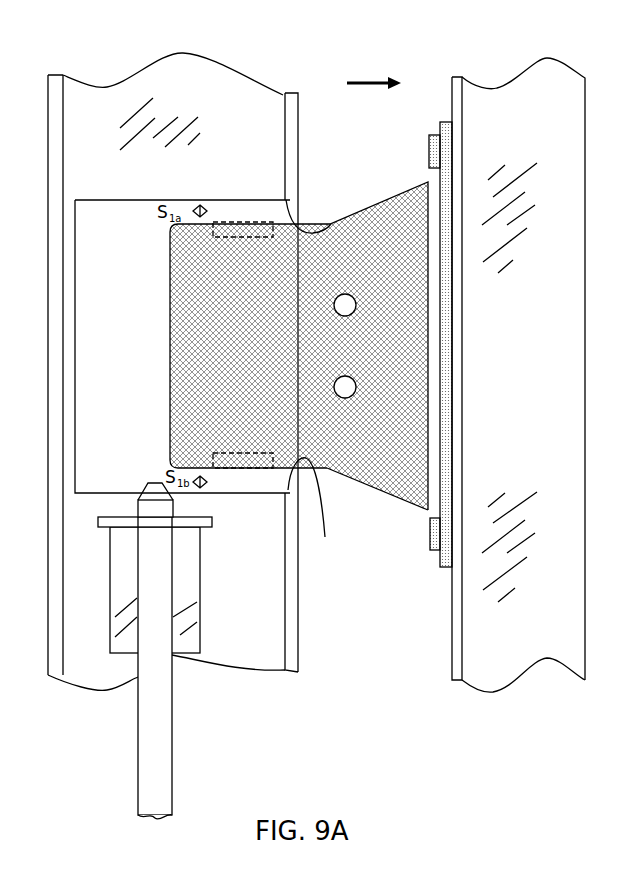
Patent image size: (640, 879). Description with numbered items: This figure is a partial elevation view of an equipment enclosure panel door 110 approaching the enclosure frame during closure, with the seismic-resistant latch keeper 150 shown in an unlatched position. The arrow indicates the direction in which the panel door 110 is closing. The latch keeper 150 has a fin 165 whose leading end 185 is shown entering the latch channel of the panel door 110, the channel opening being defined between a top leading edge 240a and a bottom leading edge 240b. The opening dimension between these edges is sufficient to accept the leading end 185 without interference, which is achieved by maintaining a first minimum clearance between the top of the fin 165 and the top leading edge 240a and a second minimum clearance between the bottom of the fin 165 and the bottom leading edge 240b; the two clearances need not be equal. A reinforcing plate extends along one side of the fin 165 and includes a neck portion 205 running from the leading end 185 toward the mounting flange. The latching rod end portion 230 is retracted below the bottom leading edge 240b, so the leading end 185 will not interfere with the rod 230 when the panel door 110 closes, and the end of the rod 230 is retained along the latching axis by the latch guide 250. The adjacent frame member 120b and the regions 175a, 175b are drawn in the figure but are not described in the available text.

The panel door 110 is at (227, 73).
The second frame member 120b is at (543, 62).
The latch keeper 150 is at (156, 274).
The fin 165 is at (267, 356).
The upper contact region 175a is at (237, 236).
The lower contact region 175b is at (243, 453).
The leading end 185 is at (168, 352).
The neck portion 205 is at (323, 470).
The latching rod end portion 230 is at (172, 758).
The top leading edge 240a is at (314, 233).
The bottom leading edge 240b is at (316, 512).
The latch guide 250 is at (202, 595).